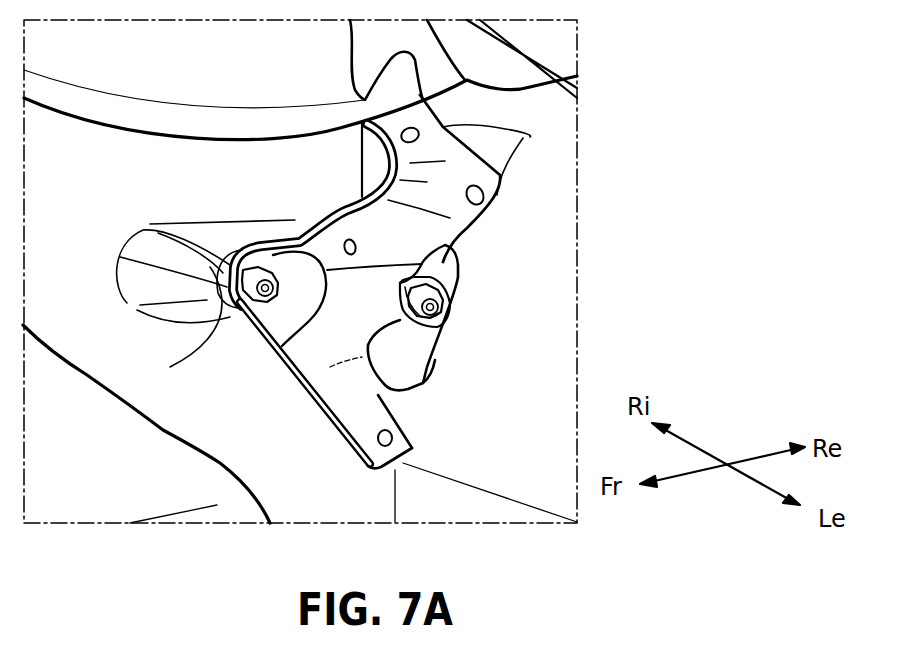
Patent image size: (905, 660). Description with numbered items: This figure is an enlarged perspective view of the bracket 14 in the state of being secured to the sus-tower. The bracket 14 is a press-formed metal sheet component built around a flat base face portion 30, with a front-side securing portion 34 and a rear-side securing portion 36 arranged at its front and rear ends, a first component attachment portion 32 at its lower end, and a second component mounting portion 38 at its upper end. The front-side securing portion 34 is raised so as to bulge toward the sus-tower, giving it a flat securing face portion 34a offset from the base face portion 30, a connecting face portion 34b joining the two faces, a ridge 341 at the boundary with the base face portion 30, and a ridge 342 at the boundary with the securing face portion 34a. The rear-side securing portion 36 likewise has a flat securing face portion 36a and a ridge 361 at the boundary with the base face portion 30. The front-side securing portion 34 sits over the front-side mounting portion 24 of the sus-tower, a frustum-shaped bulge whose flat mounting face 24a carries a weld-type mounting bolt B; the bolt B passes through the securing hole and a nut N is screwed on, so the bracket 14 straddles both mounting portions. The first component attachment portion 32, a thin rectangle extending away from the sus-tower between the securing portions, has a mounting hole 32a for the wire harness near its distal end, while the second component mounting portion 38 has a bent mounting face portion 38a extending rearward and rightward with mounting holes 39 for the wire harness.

The bracket 14 is at (382, 336).
The front-side mounting portion 24 is at (193, 312).
The mounting face 24a is at (172, 365).
The base face portion 30 is at (320, 343).
The first component attachment portion 32 is at (380, 410).
The mounting hole 32a is at (392, 446).
The front-side securing portion 34 is at (168, 264).
The securing face portion 34a is at (120, 257).
The connecting face portion 34b is at (300, 307).
The ridge 341 is at (313, 340).
The ridge 342 is at (265, 340).
The rear-side securing portion 36 is at (463, 327).
The securing face portion 36a is at (443, 340).
The ridge 361 is at (446, 242).
The second component mounting portion 38 is at (378, 178).
The mounting face portion 38a is at (360, 172).
The mounting holes 39 is at (347, 240).
The nut N is at (227, 268).
The mounting bolt B is at (250, 257).